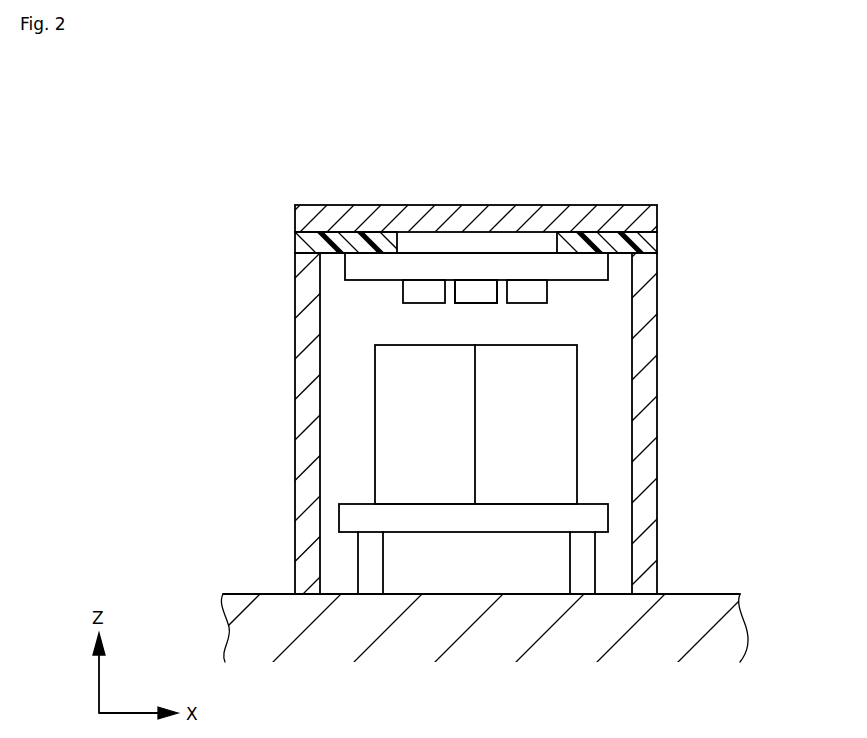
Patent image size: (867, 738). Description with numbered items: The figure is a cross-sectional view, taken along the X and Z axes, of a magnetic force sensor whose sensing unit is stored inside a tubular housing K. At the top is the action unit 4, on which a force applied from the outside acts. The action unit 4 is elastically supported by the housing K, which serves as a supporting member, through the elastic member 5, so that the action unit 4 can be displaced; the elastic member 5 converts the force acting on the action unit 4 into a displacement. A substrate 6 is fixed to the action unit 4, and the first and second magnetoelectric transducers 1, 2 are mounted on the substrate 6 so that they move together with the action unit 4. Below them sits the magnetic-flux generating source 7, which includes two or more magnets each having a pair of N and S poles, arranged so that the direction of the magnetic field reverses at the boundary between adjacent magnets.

The first magnetoelectric transducer 1 is at (525, 285).
The second magnetoelectric transducer 2 is at (470, 300).
The action unit 4 is at (571, 205).
The elastic member 5 is at (300, 247).
The substrate 6 is at (606, 268).
The magnetic-flux generating source 7 is at (554, 393).
The housing K is at (645, 465).